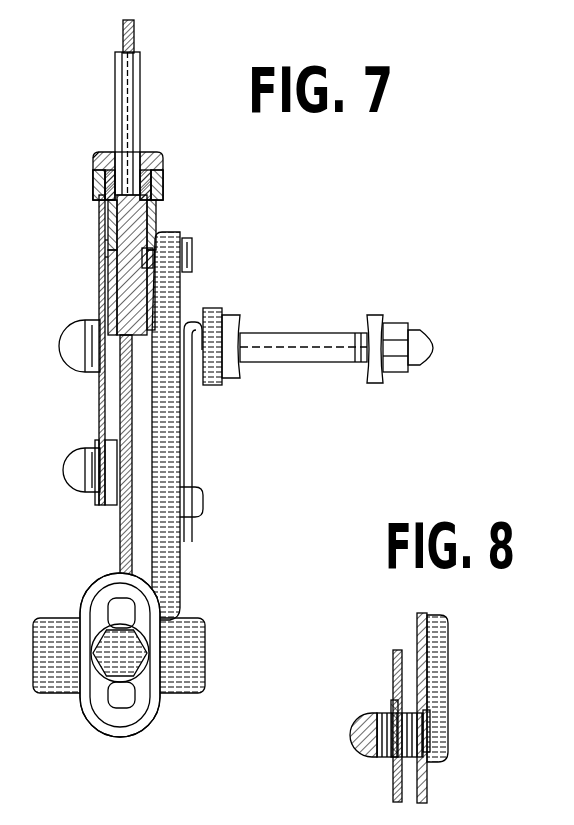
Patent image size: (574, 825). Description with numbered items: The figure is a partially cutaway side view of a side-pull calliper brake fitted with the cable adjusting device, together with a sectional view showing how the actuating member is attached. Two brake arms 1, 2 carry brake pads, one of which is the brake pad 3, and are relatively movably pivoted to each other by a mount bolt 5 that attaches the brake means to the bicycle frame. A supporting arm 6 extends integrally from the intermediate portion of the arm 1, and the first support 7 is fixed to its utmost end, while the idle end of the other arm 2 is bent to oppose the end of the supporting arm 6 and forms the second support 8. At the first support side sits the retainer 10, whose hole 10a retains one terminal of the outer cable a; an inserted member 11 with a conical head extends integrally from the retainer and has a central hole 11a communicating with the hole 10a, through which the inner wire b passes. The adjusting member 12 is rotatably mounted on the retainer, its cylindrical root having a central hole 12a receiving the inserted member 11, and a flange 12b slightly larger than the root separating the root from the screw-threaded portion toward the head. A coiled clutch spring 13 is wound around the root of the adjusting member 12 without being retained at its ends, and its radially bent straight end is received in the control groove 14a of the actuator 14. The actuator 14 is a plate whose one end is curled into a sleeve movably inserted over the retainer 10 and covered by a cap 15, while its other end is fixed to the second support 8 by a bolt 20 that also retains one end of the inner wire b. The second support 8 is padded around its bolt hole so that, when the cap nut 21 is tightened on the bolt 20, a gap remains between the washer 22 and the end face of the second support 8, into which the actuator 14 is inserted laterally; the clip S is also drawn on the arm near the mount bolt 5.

In FIG. 7, the brake arm 1 is at (180, 577).
In FIG. 7, the brake arm 2 is at (68, 465).
In FIG. 8, the brake arm 2 is at (437, 690).
In FIG. 7, the brake pad 3 is at (205, 652).
In FIG. 7, the mount bolt 5 is at (305, 343).
In FIG. 7, the supporting arm 6 is at (193, 251).
In FIG. 7, the first support 7 is at (160, 270).
In FIG. 7, the second support 8 is at (108, 496).
In FIG. 7, the retainer 10 is at (160, 165).
In FIG. 7, the hole 10a is at (140, 152).
In FIG. 7, the inserted member 11 is at (156, 213).
In FIG. 7, the hole 11a is at (158, 188).
In FIG. 7, the adjusting member 12 is at (115, 308).
In FIG. 7, the hole 12a is at (100, 212).
In FIG. 7, the flange 12b is at (100, 243).
In FIG. 7, the clutch spring 13 is at (100, 222).
In FIG. 7, the actuator 14 is at (99, 415).
In FIG. 8, the actuator 14 is at (395, 666).
In FIG. 7, the control groove 14a is at (100, 257).
In FIG. 7, the cap 15 is at (100, 152).
In FIG. 8, the bolt 20 is at (380, 714).
In FIG. 8, the cap nut 21 is at (365, 748).
In FIG. 8, the washer 22 is at (394, 760).
In FIG. 7, the spring clip S is at (193, 432).
In FIG. 7, the cable casing a is at (135, 80).
In FIG. 7, the inner wire b is at (137, 35).
In FIG. 8, the inner wire b is at (428, 786).